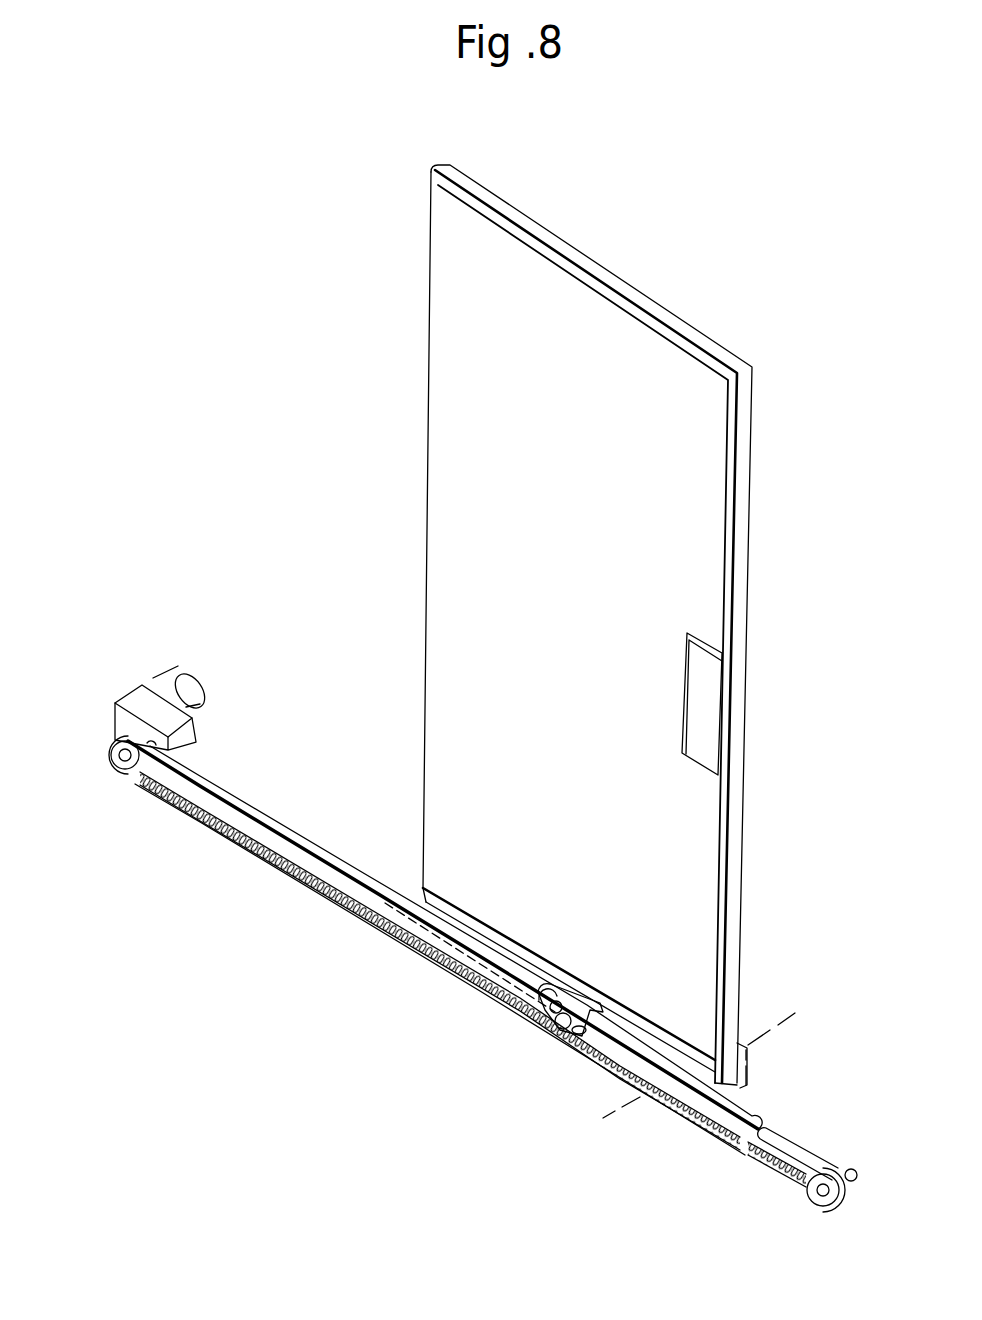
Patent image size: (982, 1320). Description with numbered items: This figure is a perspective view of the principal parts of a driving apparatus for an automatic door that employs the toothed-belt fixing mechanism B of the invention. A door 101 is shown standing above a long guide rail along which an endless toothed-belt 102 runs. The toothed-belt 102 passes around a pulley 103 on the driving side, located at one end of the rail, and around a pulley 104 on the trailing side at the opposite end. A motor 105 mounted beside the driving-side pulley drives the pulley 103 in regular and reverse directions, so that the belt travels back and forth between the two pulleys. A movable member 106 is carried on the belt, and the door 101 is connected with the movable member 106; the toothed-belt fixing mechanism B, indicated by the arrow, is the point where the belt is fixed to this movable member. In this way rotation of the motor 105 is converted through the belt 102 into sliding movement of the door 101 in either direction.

The door 101 is at (705, 558).
The endless toothed-belt 102 is at (280, 873).
The pulley on the driving side 103 is at (128, 768).
The pulley on the trailing side 104 is at (823, 1205).
The motor 105 is at (166, 684).
The movable member 106 is at (552, 985).
The toothed-belt fixing mechanism B is at (515, 1042).